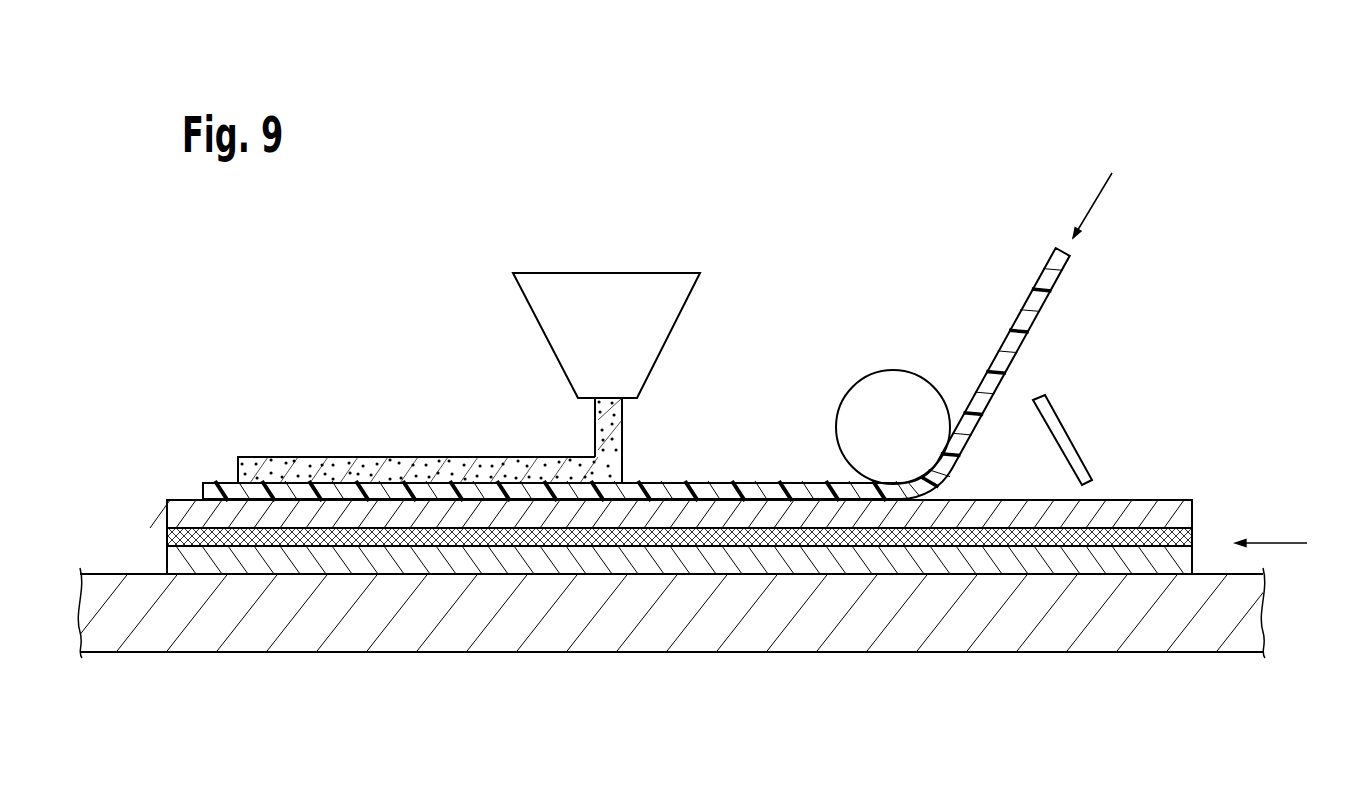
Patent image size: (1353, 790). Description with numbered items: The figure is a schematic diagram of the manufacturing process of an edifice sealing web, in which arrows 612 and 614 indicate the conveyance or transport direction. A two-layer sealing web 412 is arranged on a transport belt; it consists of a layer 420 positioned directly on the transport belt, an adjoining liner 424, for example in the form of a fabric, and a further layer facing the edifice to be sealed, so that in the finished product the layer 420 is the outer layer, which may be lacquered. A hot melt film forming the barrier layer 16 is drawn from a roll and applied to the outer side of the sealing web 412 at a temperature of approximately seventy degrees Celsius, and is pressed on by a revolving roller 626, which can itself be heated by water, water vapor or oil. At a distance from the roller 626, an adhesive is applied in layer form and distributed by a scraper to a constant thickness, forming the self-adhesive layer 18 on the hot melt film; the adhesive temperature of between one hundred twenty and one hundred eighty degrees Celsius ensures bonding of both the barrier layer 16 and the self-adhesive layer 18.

The barrier layer 16 is at (1027, 303).
The self-adhesive layer 18 is at (342, 467).
The two-layer sealing web 412 is at (693, 567).
The layer 420 is at (822, 558).
The liner 424 is at (935, 540).
The arrow 612 is at (1102, 192).
The arrow 614 is at (1063, 422).
The roller 626 is at (892, 380).